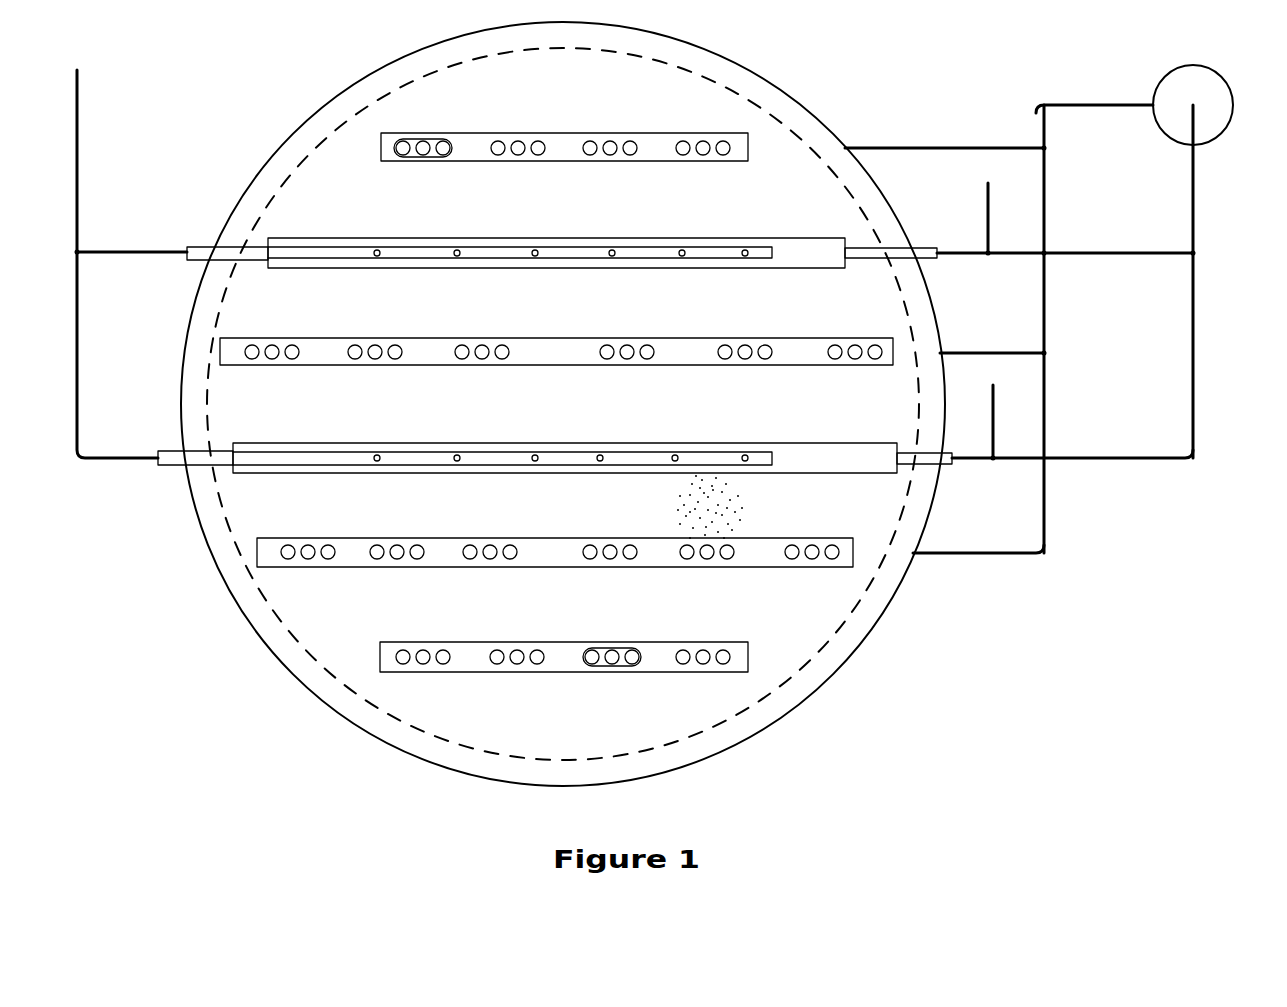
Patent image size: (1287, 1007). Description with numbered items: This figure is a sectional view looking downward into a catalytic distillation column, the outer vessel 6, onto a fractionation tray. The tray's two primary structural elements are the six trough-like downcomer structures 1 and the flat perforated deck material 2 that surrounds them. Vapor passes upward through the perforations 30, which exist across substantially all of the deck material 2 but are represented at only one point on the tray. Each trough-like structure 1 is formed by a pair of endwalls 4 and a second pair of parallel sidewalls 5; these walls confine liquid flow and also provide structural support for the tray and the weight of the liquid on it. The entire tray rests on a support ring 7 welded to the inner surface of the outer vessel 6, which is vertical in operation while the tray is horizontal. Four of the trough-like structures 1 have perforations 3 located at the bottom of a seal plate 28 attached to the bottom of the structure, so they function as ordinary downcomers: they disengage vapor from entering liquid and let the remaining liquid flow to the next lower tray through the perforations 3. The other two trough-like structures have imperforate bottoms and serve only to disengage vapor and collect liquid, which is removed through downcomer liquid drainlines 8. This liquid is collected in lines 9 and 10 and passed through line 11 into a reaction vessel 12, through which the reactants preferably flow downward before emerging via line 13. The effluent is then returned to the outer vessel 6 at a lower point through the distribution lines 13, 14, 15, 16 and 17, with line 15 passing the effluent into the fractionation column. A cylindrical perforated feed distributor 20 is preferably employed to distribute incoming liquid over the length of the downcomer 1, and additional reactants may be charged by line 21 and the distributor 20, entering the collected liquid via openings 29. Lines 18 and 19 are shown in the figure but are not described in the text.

The trough-like downcomer structure 1 is at (521, 395).
The perforated deck material 2 is at (818, 204).
The perforations 3 is at (445, 140).
The endwalls 4 is at (233, 468).
The sidewalls 5 is at (470, 370).
The outer vessel 6 is at (760, 727).
The support ring 7 is at (833, 660).
The downcomer liquid drainlines 8 is at (554, 359).
The line 9 is at (1113, 460).
The line 10 is at (1070, 253).
The line 11 is at (1193, 188).
The reaction vessel 12 is at (1232, 92).
The line 13 is at (1078, 105).
The distribution line 14 is at (925, 147).
The line 15 is at (968, 353).
The distribution line 16 is at (1044, 325).
The distribution line 17 is at (965, 553).
The supply line 18 is at (77, 145).
The supply line 19 is at (77, 372).
The cylindrical perforated feed distributor 20 is at (278, 253).
The inlet line 21 is at (103, 252).
The seal plate 28 is at (472, 145).
The openings 29 is at (535, 253).
The perforations 30 is at (728, 510).